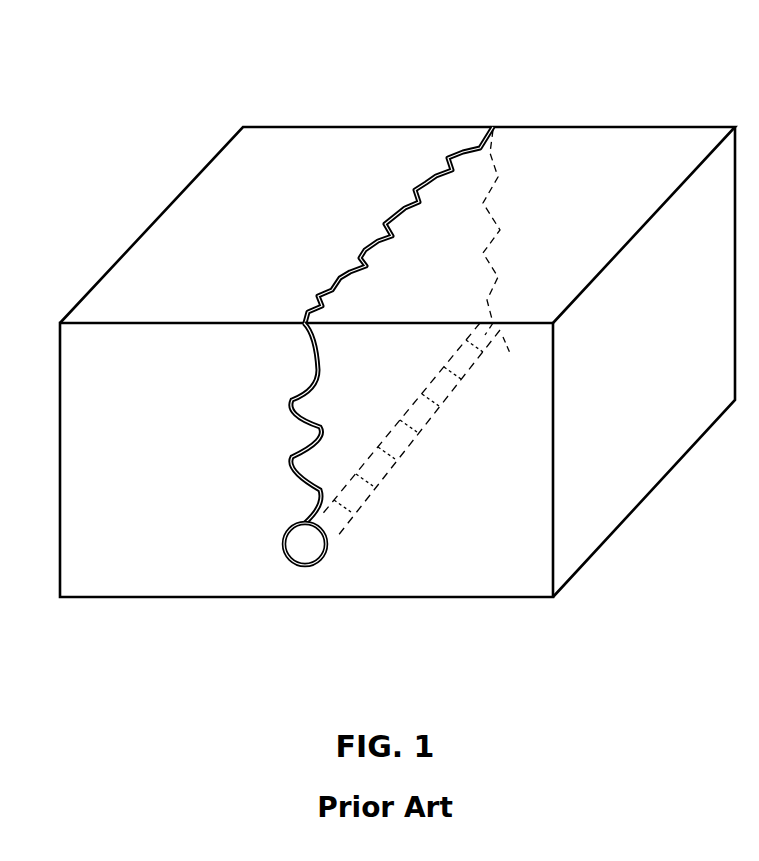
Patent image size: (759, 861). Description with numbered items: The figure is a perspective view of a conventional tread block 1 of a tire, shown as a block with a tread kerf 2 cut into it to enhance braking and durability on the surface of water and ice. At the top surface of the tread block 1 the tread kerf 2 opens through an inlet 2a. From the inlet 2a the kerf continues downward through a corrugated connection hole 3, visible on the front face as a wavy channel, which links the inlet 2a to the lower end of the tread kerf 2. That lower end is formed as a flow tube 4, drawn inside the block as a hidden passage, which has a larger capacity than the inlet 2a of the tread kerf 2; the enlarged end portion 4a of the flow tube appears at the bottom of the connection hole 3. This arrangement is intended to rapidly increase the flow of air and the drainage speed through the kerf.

The tread block 1 is at (622, 135).
The tread kerf 2 is at (347, 258).
The inlet 2a is at (433, 177).
The corrugated connection hole 3 is at (298, 392).
The flow tube 4 is at (383, 510).
The crack tip 4a is at (330, 533).